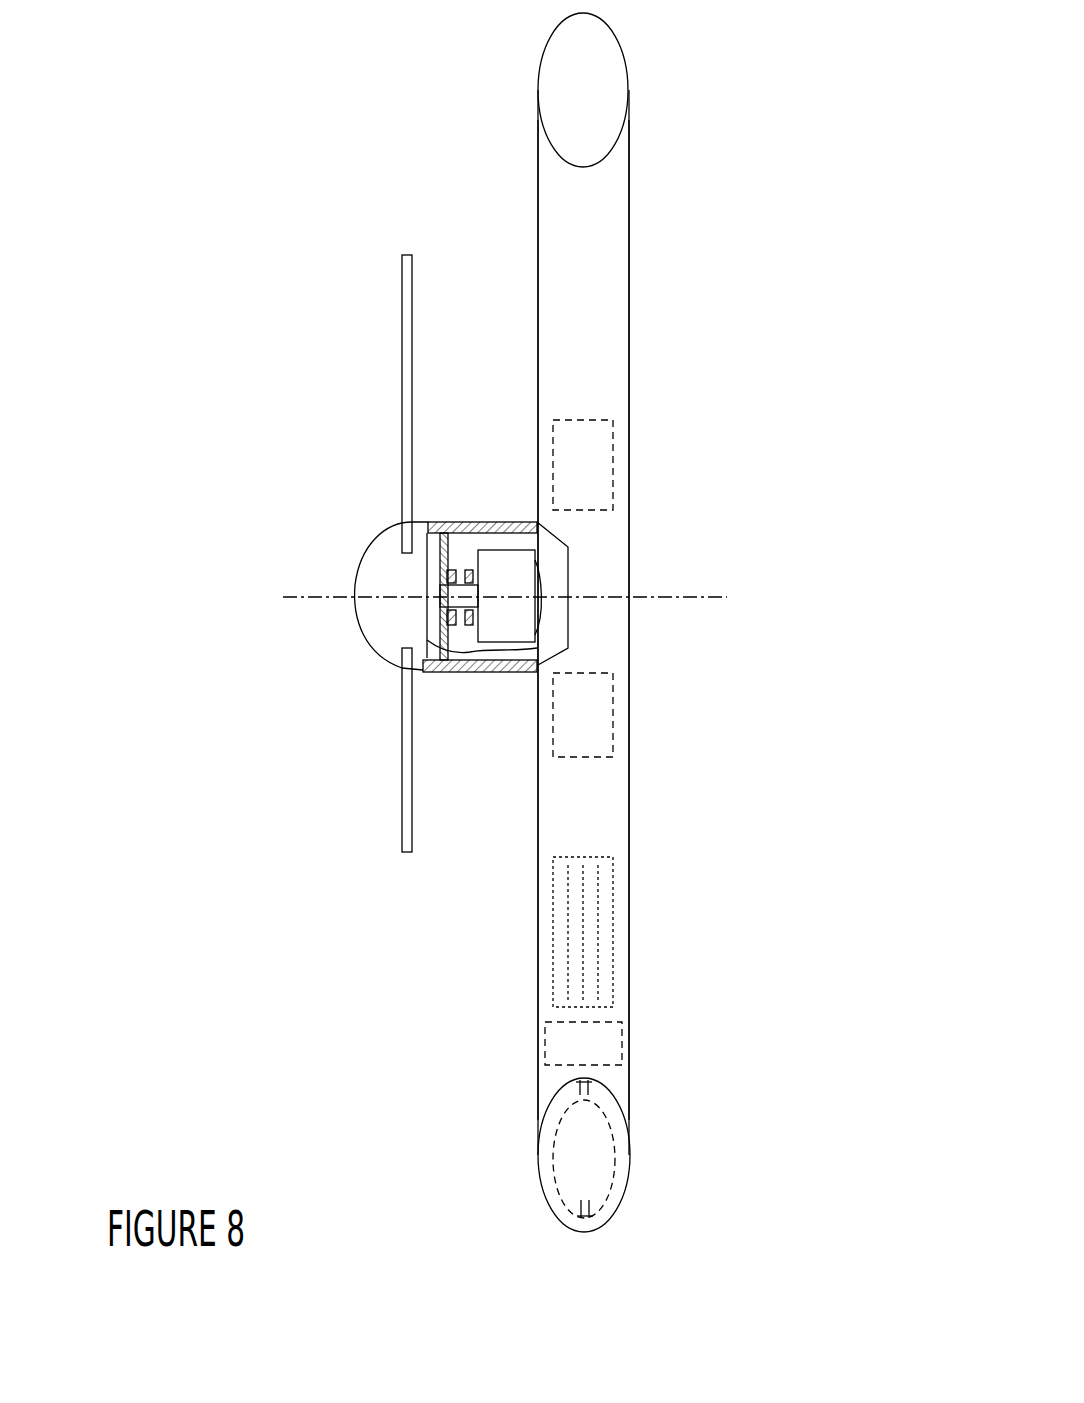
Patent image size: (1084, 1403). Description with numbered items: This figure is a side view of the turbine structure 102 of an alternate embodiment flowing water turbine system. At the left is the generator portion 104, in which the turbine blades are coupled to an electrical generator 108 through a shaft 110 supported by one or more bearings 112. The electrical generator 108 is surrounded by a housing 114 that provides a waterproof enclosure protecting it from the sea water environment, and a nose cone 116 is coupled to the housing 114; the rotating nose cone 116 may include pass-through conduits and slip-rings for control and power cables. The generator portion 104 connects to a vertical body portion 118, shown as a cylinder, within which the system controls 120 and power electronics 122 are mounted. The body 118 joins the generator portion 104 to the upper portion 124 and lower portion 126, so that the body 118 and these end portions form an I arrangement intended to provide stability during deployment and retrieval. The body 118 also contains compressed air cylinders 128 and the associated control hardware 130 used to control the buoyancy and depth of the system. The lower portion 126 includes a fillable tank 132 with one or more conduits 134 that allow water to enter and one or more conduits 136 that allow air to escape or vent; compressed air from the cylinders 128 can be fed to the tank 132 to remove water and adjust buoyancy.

The turbine structure 102 is at (768, 543).
The generator portion 104 is at (326, 420).
The electrical generator 108 is at (477, 522).
The shaft 110 is at (464, 625).
The bearings 112 is at (453, 625).
The housing 114 is at (512, 522).
The nose cone 116 is at (377, 658).
The vertical body portion 118 is at (629, 318).
The controls 120 is at (613, 480).
The power electronics 122 is at (613, 738).
The upper portion 124 is at (601, 15).
The lower portion 126 is at (630, 1148).
The compressed air cylinders 128 is at (613, 938).
The control hardware 130 is at (622, 1042).
The tank 132 is at (610, 1180).
The conduits 134 is at (578, 1216).
The conduits 136 is at (576, 1092).